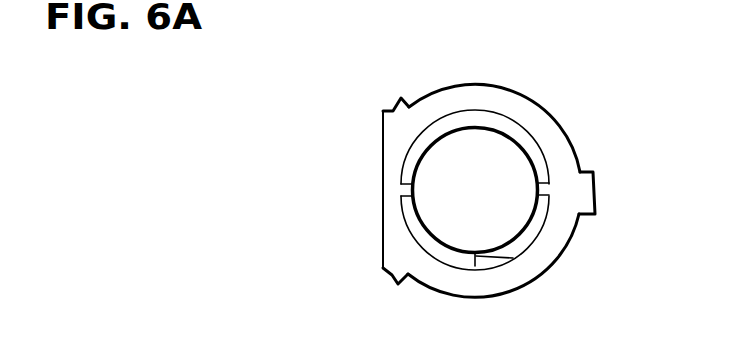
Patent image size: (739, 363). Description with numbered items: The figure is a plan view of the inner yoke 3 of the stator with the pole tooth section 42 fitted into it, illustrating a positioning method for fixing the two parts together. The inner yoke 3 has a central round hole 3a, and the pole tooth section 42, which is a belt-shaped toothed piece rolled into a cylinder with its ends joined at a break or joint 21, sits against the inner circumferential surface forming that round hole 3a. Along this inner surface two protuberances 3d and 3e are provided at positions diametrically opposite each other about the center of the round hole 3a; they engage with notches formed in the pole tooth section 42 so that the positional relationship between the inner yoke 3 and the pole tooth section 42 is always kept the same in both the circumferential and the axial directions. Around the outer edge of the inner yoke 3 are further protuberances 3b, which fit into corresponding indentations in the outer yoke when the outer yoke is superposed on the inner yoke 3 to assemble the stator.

The inner yoke 3 is at (487, 284).
The round hole 3a is at (441, 254).
The protuberances 3b is at (385, 111).
The protuberance 3d is at (549, 190).
The protuberance 3e is at (407, 192).
The break (joint) 21 is at (513, 258).
The pole tooth section 42 is at (505, 128).